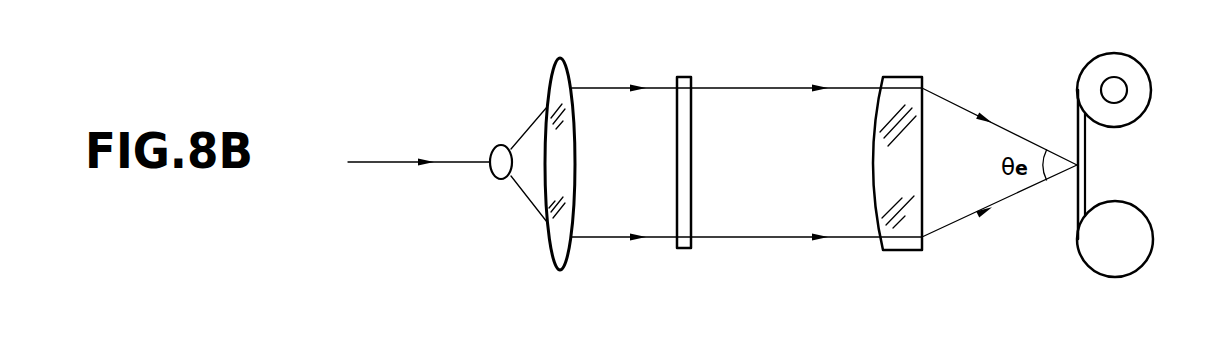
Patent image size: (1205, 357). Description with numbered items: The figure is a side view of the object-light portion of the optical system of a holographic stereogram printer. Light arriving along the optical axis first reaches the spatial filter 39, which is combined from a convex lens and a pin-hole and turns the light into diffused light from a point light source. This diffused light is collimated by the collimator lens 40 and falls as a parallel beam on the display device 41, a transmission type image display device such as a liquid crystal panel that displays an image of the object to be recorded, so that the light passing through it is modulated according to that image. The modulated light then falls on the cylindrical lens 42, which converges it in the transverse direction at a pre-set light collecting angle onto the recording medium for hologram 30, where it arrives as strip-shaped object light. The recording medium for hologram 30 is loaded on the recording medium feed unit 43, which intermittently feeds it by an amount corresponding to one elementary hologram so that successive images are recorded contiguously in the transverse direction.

The recording medium for hologram 30 is at (1082, 178).
The spatial filter 39 is at (496, 154).
The collimator lens 40 is at (566, 64).
The display device 41 is at (681, 76).
The cylindrical lens 42 is at (905, 77).
The recording medium feed unit 43 is at (1138, 86).